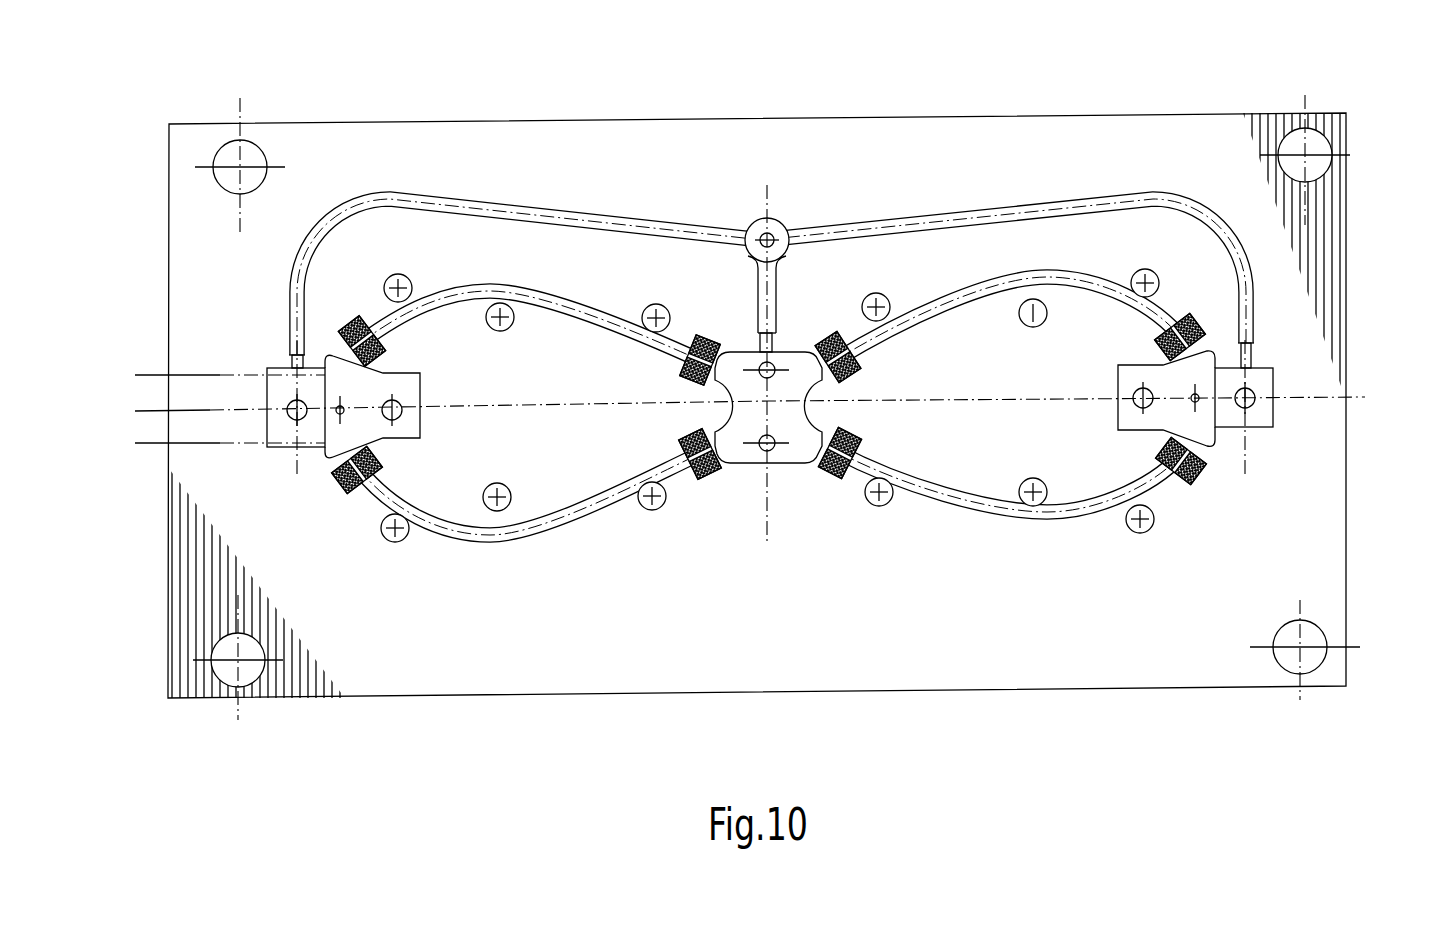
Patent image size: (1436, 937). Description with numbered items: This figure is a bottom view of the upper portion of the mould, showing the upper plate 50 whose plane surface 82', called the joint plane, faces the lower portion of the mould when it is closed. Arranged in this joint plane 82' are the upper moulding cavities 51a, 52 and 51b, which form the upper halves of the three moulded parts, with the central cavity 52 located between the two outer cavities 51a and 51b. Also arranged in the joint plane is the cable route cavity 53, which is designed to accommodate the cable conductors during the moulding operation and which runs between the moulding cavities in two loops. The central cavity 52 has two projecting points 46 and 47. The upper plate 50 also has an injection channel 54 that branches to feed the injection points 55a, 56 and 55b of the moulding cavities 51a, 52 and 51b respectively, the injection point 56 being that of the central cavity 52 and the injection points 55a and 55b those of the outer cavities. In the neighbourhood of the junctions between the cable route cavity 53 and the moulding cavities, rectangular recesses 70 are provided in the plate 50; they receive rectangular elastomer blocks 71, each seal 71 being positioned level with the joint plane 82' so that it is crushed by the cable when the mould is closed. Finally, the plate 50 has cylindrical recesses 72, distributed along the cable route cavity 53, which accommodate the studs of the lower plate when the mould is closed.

The upper plate 50 is at (497, 155).
The injection channel 54 is at (945, 172).
The plane surface (joint plane) 82' is at (838, 154).
The cable route cavity 53 is at (1021, 258).
The rectangular elastomer block (seal) 71 is at (718, 333).
The injection point 56 is at (782, 340).
The cylindrical recess 72 is at (421, 270).
The injection point 55a is at (270, 352).
The injection point 55b is at (1263, 350).
The rectangular recess 70 is at (685, 440).
The projecting point 47 is at (774, 376).
The projecting point 46 is at (773, 448).
The upper moulding cavity 51a is at (252, 470).
The upper moulding cavity 51b is at (1226, 447).
The upper moulding cavity 52 is at (731, 512).